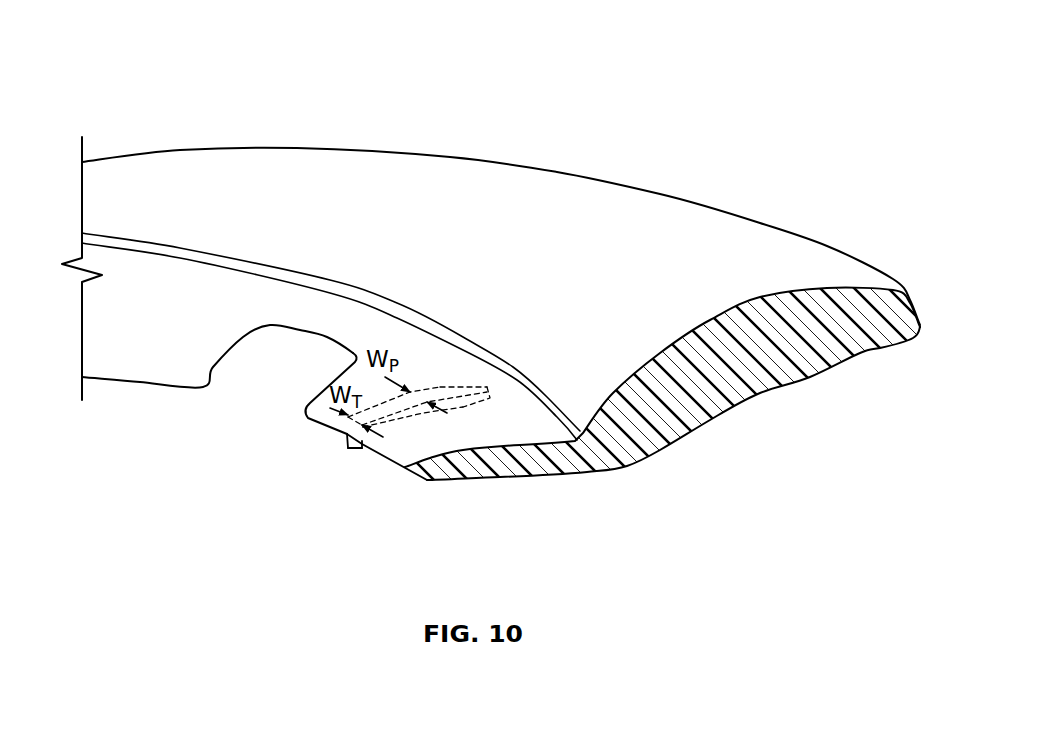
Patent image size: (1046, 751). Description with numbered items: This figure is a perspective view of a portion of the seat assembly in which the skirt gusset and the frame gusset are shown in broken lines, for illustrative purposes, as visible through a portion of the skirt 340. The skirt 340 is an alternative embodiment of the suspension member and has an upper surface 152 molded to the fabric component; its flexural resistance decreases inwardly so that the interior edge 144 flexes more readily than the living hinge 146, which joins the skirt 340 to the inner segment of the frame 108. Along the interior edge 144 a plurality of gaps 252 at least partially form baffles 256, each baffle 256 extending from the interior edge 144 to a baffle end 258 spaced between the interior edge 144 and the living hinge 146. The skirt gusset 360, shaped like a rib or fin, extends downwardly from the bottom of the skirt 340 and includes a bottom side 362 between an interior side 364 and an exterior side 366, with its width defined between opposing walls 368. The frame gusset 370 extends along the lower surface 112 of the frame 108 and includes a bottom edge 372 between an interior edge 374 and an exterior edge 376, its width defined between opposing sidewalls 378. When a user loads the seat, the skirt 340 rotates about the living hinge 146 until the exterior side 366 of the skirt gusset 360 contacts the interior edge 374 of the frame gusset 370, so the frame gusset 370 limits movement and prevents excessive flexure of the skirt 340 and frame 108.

The frame 108 is at (752, 313).
The lower surface 112 is at (760, 387).
The interior edge 144 is at (153, 382).
The living hinge 146 is at (330, 300).
The upper surface 152 is at (245, 302).
The gap 252 is at (263, 413).
The baffle 256 is at (90, 360).
The baffle end 258 is at (198, 165).
The skirt 340 is at (658, 376).
The skirt gusset 360 is at (352, 450).
The bottom side 362 is at (357, 450).
The interior side 364 is at (348, 437).
The exterior side 366 is at (428, 410).
The opposing walls 368 is at (367, 450).
The frame gusset 370 is at (453, 385).
The bottom edge 372 is at (490, 390).
The interior edge 374 is at (430, 403).
The exterior edge 376 is at (490, 390).
The opposing sidewalls 378 is at (453, 385).